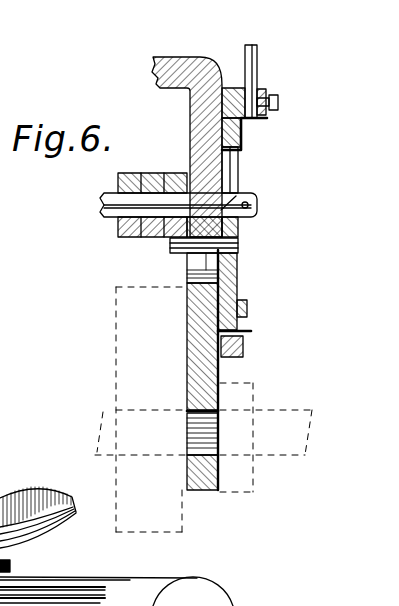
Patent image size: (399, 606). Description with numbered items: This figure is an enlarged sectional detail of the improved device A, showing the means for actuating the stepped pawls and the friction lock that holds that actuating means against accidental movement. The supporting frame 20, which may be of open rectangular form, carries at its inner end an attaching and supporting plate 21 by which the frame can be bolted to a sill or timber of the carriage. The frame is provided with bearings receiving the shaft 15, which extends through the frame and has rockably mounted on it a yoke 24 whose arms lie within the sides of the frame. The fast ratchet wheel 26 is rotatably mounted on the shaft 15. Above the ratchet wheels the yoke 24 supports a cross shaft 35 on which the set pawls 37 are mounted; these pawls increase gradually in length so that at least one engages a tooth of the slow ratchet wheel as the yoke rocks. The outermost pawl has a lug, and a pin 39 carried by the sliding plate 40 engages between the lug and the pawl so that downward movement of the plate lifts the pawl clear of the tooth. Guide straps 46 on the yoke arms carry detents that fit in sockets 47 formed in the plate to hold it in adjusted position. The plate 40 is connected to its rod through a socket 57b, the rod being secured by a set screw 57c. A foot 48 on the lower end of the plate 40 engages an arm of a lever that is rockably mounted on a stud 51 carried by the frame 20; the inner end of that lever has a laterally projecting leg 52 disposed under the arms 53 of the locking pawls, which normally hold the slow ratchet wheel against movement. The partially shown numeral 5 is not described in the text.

The yoke 24 is at (159, 89).
The stud 51 is at (252, 87).
The set screw 57c is at (275, 95).
The socket 57b is at (267, 116).
The sliding plate 40 is at (248, 133).
The cross shaft 35 is at (310, 169).
The set pawls 37 is at (123, 237).
The pin 39 is at (185, 249).
The sockets 47 is at (236, 286).
The guide straps 46 is at (248, 310).
The foot 48 is at (252, 331).
The fast ratchet wheel 26 is at (117, 334).
The shaft 15 is at (103, 411).
The improved device A is at (221, 384).
The arms 53 is at (15, 497).
The drum part 5 is at (14, 483).
The leg 52 is at (0, 567).
The supporting frame 20 is at (30, 603).
The attaching and supporting plate 21 is at (183, 583).